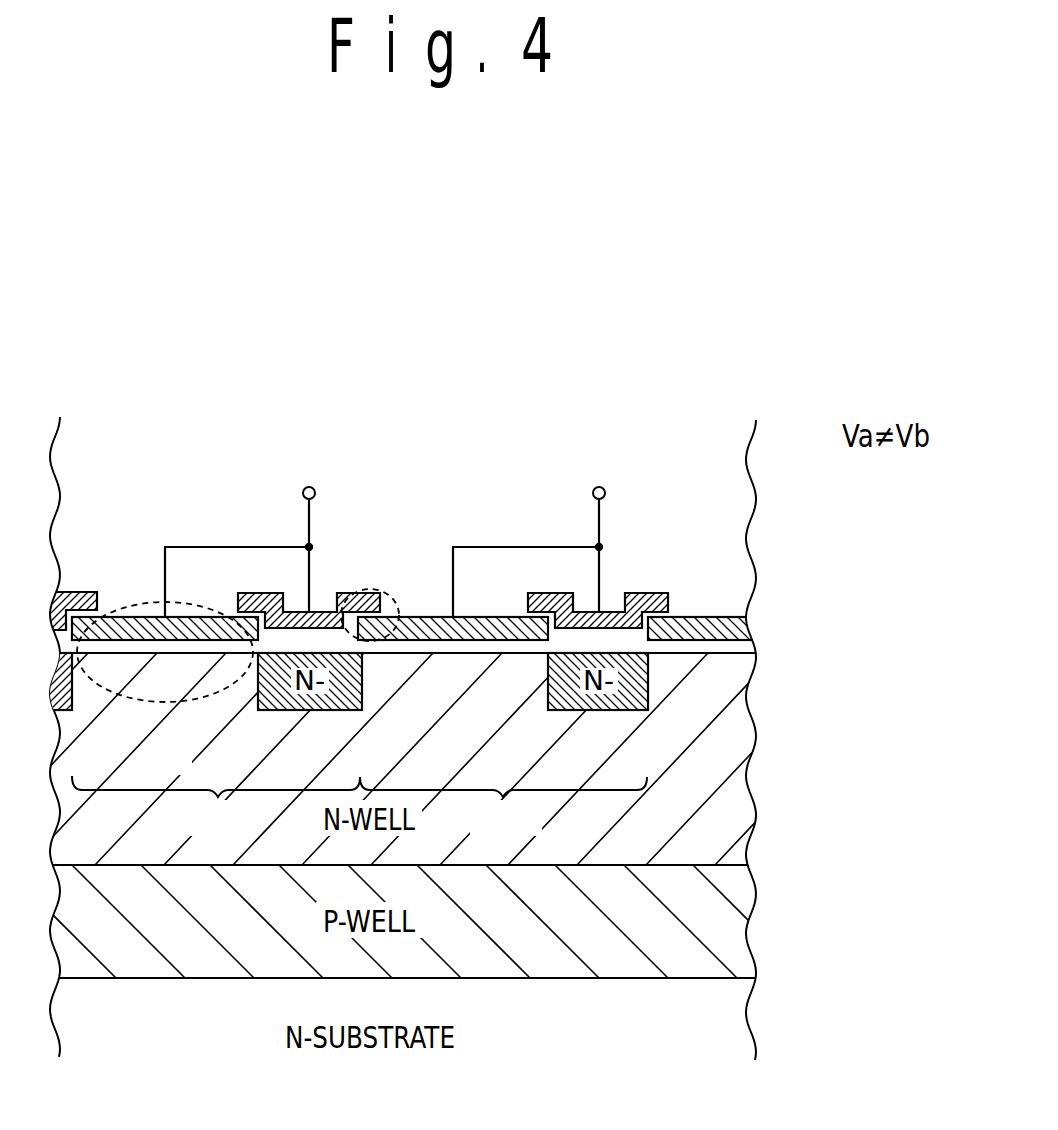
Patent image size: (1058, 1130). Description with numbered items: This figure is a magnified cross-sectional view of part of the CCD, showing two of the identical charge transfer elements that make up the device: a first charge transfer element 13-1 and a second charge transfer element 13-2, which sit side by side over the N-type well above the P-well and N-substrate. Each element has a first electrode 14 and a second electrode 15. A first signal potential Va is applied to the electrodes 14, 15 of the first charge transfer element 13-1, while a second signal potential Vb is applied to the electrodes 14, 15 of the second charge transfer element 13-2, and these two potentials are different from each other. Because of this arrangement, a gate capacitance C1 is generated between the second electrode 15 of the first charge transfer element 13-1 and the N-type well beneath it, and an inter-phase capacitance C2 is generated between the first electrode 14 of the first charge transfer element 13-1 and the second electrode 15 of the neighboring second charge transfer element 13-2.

The first charge transfer element 13-1 is at (216, 806).
The second charge transfer element 13-2 is at (503, 807).
The first electrode 14 is at (347, 593).
The second electrode 15 is at (217, 628).
The first signal potential Va is at (339, 460).
The second signal potential Vb is at (629, 460).
The gate capacitance C1 is at (167, 703).
The inter-phase capacitance C2 is at (372, 590).